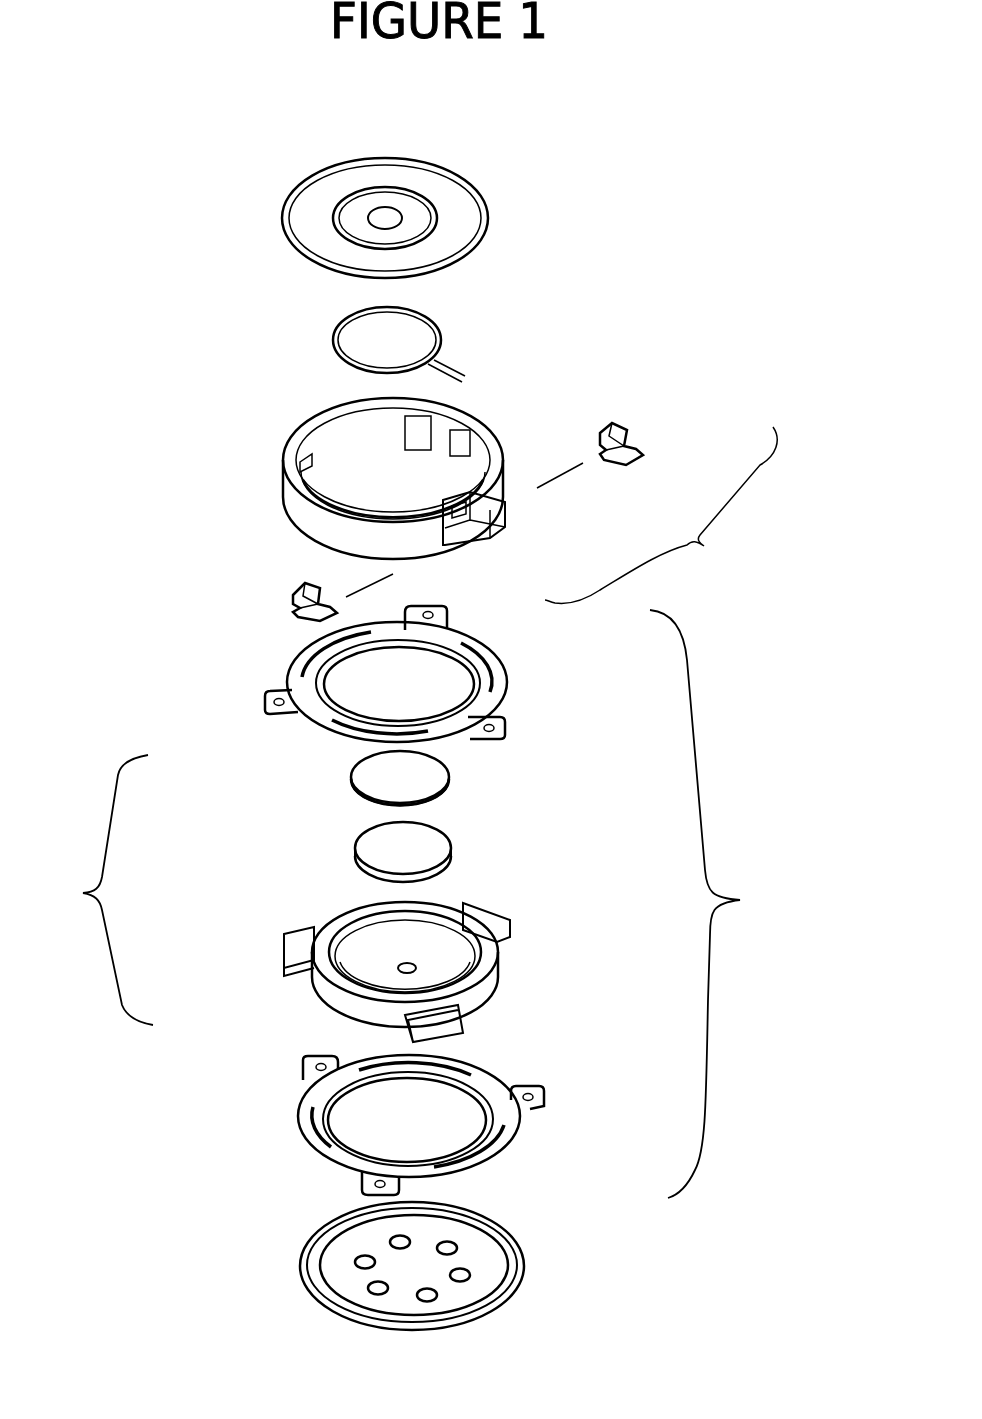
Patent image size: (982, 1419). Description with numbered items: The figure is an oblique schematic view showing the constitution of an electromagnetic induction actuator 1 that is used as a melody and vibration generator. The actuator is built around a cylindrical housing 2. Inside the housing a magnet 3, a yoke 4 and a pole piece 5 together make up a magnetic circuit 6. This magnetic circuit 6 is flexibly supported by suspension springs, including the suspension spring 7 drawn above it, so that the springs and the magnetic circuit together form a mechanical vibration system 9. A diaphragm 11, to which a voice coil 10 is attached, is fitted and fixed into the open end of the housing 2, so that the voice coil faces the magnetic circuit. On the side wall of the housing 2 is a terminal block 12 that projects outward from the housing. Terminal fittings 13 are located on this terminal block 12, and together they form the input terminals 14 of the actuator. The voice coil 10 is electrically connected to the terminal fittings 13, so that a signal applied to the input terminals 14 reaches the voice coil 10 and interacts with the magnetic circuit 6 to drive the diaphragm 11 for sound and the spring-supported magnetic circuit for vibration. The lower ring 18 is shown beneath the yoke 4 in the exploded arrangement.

The electromagnetic induction actuator 1 is at (700, 320).
The cylindrical housing 2 is at (275, 498).
The magnet 3 is at (462, 856).
The yoke 4 is at (302, 986).
The pole piece 5 is at (342, 782).
The magnetic circuit 6 is at (106, 890).
The suspension spring 7 is at (525, 675).
The mechanical vibration system 9 is at (711, 904).
The voice coil 10 is at (455, 342).
The diaphragm 11 is at (500, 217).
The terminal block 12 is at (503, 525).
The terminal fittings 13 is at (660, 449).
The input terminals 14 is at (661, 515).
The lower spring ring 18 is at (533, 1140).